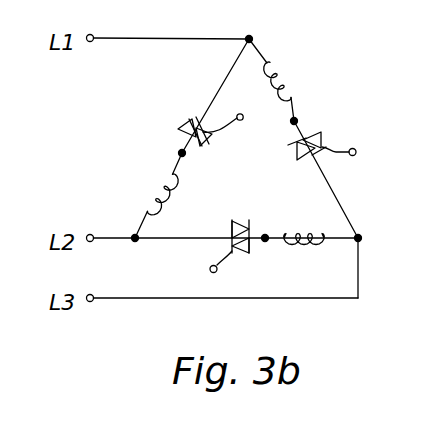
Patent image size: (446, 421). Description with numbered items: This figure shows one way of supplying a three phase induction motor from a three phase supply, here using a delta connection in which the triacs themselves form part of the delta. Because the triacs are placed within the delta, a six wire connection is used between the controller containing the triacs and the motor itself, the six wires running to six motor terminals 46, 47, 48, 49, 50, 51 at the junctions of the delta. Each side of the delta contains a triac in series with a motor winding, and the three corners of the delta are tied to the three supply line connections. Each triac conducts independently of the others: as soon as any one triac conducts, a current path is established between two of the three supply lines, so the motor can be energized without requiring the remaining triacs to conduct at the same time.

The motor terminal 46 is at (180, 152).
The motor terminal 47 is at (265, 241).
The motor terminal 48 is at (296, 120).
The motor terminal 49 is at (356, 240).
The motor terminal 50 is at (251, 40).
The motor terminal 51 is at (134, 237).